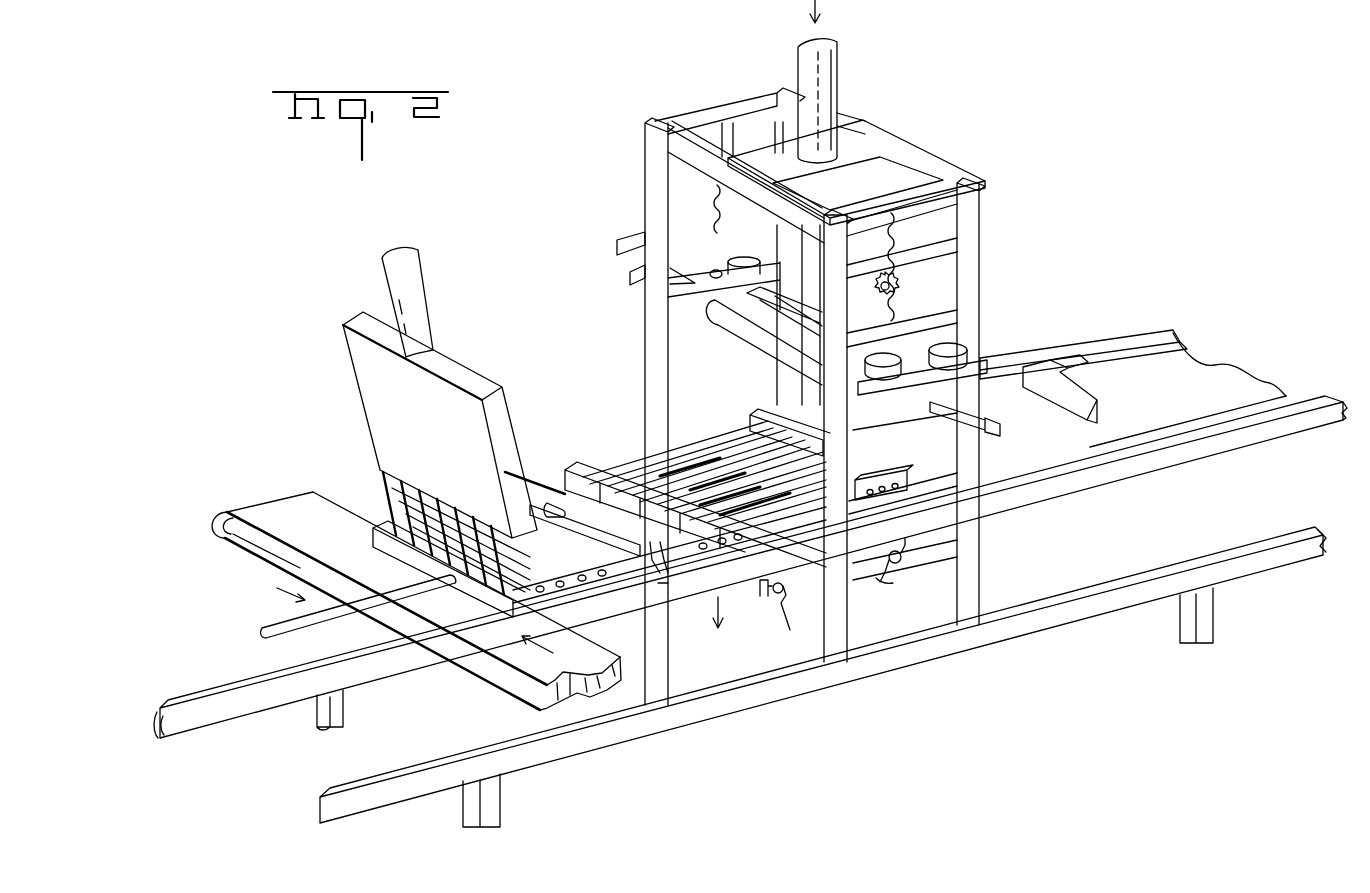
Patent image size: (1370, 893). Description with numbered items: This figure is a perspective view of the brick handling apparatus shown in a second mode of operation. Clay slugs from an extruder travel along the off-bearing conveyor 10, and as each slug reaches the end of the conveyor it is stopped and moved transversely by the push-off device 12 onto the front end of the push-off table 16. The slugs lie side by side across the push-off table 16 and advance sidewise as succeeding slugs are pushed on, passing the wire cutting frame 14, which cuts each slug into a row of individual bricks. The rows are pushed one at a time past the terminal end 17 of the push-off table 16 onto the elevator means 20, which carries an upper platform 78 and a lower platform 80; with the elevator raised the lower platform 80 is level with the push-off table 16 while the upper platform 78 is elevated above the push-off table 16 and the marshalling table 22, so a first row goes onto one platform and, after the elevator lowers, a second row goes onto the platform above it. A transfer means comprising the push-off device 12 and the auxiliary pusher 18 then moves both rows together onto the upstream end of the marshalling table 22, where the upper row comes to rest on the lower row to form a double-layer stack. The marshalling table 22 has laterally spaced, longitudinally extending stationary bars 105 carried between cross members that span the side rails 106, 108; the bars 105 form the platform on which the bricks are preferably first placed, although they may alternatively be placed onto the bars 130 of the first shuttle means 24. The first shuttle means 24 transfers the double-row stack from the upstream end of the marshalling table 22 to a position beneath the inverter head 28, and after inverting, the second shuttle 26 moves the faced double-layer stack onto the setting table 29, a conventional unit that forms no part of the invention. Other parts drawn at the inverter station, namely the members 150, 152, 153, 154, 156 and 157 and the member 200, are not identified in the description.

The off-bearing conveyor 10 is at (310, 537).
The push-off device 12 is at (345, 610).
The wire cutting frame 14 is at (480, 368).
The push-off table 16 is at (650, 573).
The terminal end 17 is at (652, 568).
The auxiliary pusher 18 is at (545, 485).
The elevator means 20 is at (583, 441).
The marshalling table 22 is at (916, 496).
The first shuttle means 24 is at (800, 590).
The second shuttle 26 is at (873, 573).
The inverter head 28 is at (986, 308).
The setting table 29 is at (1213, 378).
The upper platform 78 is at (708, 555).
The lower platform 80 is at (662, 585).
The stationary bars 105 is at (720, 462).
The side rail 106 is at (1060, 337).
The side rail 108 is at (993, 507).
The bars of the shuttle 130 is at (724, 482).
The platform 150 is at (920, 163).
The cross beam 152 is at (766, 220).
The cylinder 153 is at (837, 58).
The bar 154 is at (745, 331).
The chain 156 is at (896, 243).
The sprocket 157 is at (888, 282).
The T block 200 is at (1057, 387).